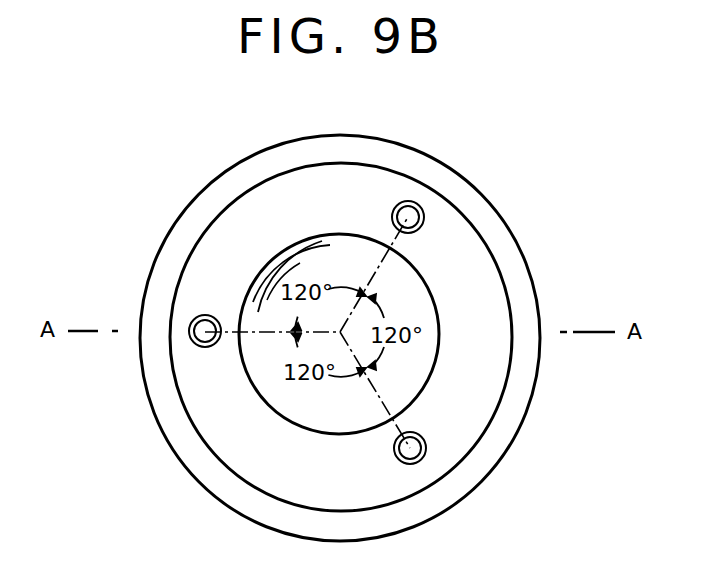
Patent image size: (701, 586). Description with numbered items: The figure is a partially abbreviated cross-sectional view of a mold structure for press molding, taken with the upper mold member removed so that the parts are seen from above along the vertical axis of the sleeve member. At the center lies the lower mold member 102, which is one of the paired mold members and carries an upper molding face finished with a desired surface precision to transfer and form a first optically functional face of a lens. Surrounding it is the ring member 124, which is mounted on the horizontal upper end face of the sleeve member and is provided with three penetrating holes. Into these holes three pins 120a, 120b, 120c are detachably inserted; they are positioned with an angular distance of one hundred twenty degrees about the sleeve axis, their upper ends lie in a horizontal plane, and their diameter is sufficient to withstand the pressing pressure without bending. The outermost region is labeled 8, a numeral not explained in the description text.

The housing outer ring 8 is at (193, 449).
The ring member 124 is at (488, 295).
The lower mold member 102 is at (410, 383).
The pin 120a is at (201, 328).
The pin 120b is at (422, 212).
The pin 120c is at (424, 455).